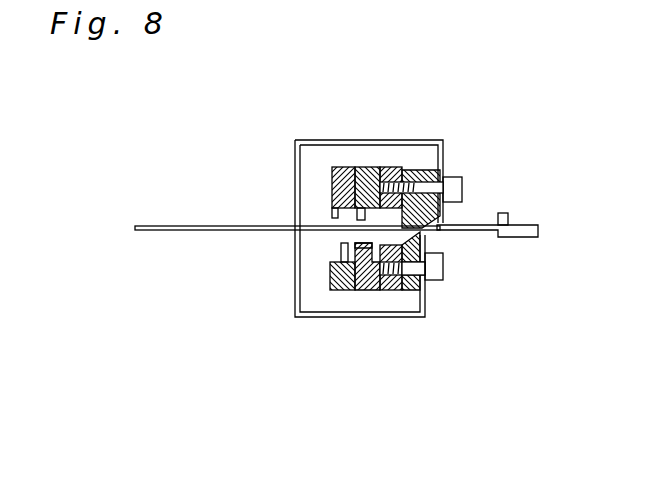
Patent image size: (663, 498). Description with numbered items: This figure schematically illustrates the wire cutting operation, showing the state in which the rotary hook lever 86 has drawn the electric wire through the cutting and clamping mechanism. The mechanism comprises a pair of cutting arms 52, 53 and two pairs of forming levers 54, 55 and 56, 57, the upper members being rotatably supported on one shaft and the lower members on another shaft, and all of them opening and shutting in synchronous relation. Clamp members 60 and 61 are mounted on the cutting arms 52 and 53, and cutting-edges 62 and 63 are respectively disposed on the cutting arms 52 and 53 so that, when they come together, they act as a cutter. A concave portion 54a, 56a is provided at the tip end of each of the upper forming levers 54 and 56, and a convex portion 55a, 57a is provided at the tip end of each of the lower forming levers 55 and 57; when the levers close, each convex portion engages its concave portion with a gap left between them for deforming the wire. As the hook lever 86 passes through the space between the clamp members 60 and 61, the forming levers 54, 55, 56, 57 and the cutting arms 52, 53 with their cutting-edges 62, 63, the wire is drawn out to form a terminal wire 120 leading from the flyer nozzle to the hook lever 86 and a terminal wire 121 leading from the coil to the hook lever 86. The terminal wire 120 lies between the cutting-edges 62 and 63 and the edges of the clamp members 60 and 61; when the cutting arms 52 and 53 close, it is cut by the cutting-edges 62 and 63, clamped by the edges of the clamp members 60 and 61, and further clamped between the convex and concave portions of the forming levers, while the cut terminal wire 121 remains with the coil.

The cutting arm 52 is at (387, 167).
The cutting arm 53 is at (395, 290).
The forming lever 54 is at (342, 167).
The concave portion 54a is at (334, 210).
The forming lever 55 is at (343, 290).
The convex portion 55a is at (342, 245).
The forming lever 56 is at (368, 167).
The concave portion 56a is at (358, 218).
The forming lever 57 is at (372, 290).
The convex portion 57a is at (370, 243).
The clamp member 60 is at (415, 170).
The clamp member 61 is at (324, 313).
The cutting-edge 62 is at (430, 172).
The cutting-edge 63 is at (415, 290).
The hook lever 86 is at (525, 226).
The terminal wire 120 is at (207, 226).
The terminal wire 121 is at (478, 233).